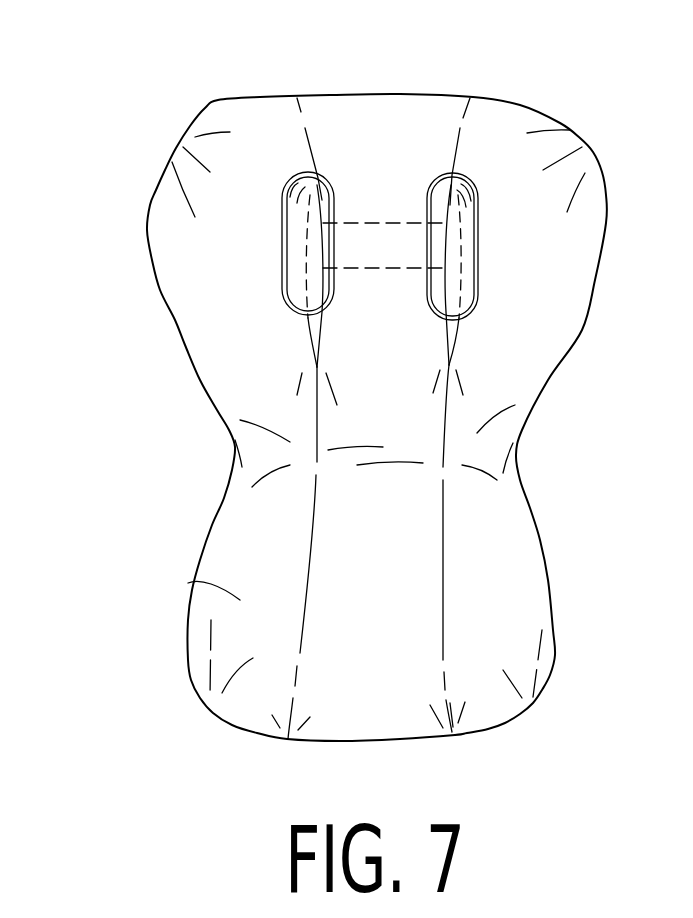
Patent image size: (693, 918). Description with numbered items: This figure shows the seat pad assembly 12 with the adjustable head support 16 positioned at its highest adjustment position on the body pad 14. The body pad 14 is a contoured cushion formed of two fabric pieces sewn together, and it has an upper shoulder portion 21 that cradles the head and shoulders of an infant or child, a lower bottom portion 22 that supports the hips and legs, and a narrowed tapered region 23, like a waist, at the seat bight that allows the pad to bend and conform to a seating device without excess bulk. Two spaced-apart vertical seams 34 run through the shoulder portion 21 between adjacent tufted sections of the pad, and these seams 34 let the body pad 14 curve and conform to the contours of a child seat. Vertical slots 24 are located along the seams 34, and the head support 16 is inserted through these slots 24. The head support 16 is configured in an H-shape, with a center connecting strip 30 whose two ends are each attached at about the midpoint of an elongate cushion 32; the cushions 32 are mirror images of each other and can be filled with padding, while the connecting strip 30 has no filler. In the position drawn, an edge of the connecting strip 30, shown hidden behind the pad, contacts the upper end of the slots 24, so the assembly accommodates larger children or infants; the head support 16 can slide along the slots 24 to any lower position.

The seat pad assembly 12 is at (205, 92).
The body pad 14 is at (279, 132).
The adjustable head support 16 is at (320, 178).
The upper shoulder portion 21 is at (197, 278).
The lower bottom portion 22 is at (190, 602).
The narrowed tapered region 23 is at (233, 453).
The slots 24 is at (315, 333).
The connecting strip 30 is at (353, 247).
The elongate cushion 32 is at (473, 235).
The vertical seams 34 is at (308, 597).